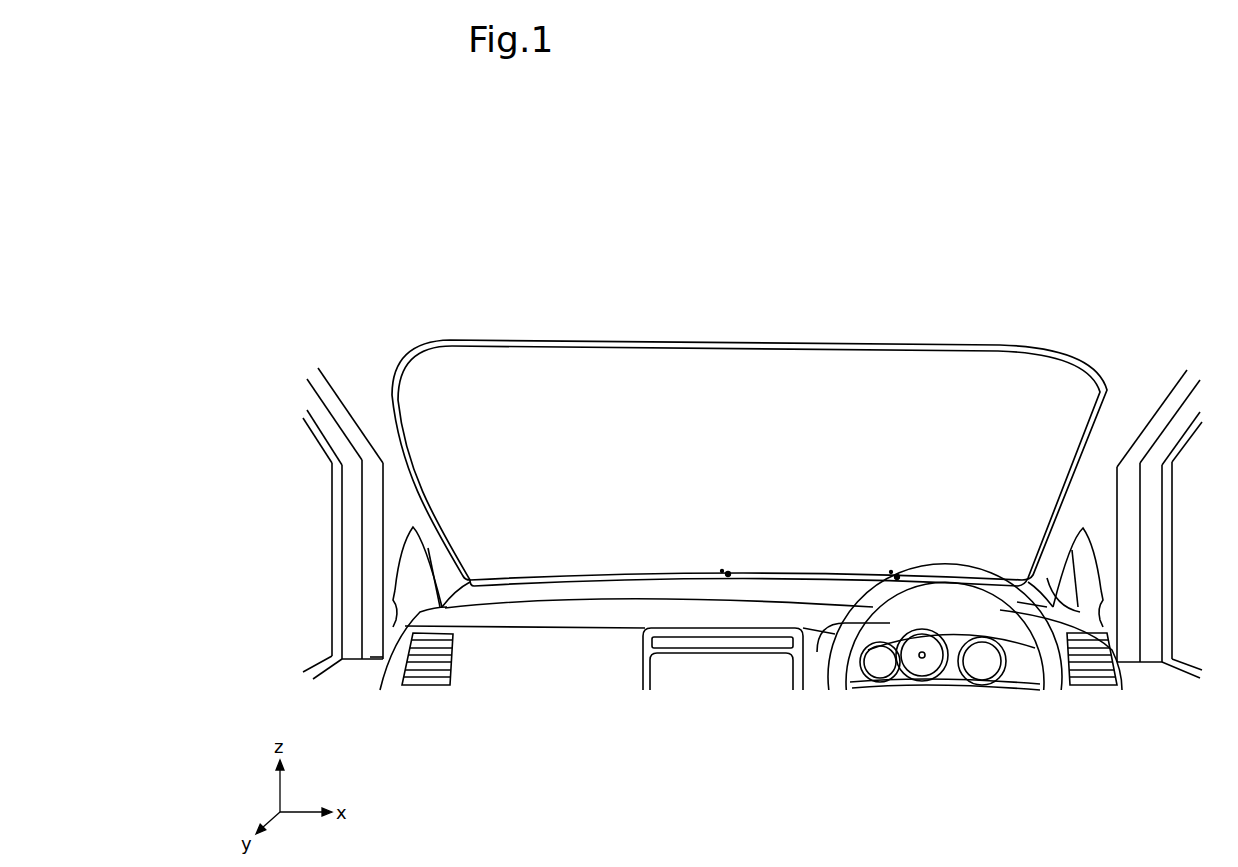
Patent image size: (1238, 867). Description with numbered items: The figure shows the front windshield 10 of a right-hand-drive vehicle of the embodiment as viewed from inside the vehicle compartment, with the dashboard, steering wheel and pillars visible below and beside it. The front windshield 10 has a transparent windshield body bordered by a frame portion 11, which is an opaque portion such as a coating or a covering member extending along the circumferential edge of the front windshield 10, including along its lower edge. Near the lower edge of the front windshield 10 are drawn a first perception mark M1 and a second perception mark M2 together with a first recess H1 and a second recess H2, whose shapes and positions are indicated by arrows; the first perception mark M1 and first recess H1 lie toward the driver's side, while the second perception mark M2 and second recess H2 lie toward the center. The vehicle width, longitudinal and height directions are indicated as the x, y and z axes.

The front windshield 10 is at (480, 457).
The frame portion 11 is at (458, 553).
The first recess H1 is at (888, 562).
The second recess H2 is at (718, 563).
The first perception mark M1 is at (903, 560).
The second perception mark M2 is at (729, 562).